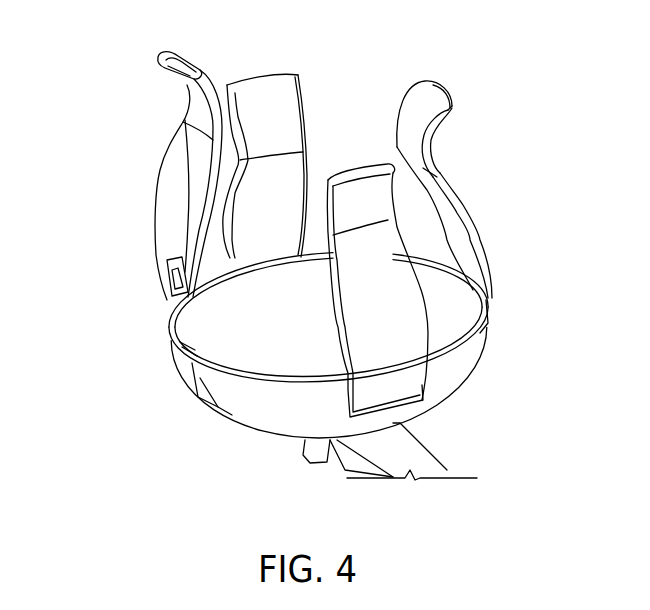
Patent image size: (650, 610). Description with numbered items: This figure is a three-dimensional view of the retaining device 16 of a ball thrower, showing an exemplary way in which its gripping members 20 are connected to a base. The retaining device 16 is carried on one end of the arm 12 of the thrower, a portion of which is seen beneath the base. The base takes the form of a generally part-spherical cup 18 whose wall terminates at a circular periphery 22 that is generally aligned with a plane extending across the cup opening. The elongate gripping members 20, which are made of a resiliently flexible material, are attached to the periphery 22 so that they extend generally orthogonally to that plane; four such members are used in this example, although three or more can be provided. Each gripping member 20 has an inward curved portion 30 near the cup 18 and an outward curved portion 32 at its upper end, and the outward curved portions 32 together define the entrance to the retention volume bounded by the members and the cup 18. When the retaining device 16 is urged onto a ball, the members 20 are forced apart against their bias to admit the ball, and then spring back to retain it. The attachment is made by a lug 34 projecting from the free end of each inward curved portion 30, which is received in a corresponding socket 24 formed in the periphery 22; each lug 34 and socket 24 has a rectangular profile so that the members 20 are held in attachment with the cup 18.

The arm 12 is at (438, 463).
The retaining device 16 is at (102, 206).
The cup 18 is at (250, 427).
The gripping member 20 is at (162, 173).
The circular periphery 22 is at (170, 320).
The socket 24 is at (170, 346).
The inward curved portion 30 is at (324, 181).
The outward curved portion 32 is at (300, 100).
The lug 34 is at (167, 273).